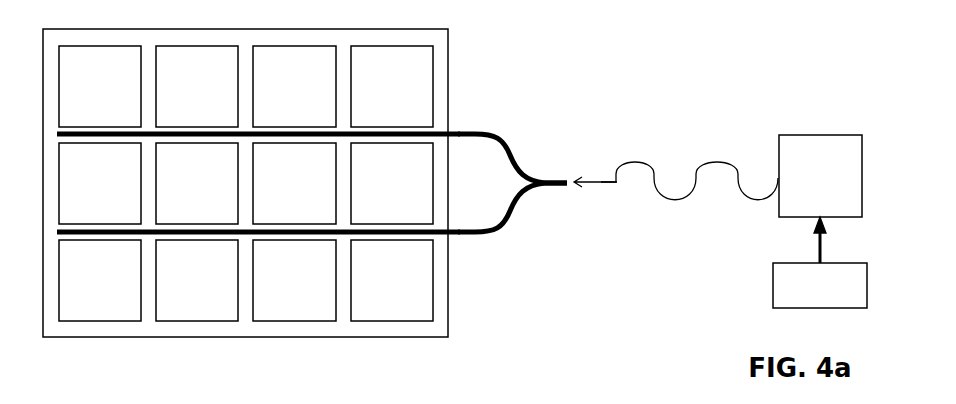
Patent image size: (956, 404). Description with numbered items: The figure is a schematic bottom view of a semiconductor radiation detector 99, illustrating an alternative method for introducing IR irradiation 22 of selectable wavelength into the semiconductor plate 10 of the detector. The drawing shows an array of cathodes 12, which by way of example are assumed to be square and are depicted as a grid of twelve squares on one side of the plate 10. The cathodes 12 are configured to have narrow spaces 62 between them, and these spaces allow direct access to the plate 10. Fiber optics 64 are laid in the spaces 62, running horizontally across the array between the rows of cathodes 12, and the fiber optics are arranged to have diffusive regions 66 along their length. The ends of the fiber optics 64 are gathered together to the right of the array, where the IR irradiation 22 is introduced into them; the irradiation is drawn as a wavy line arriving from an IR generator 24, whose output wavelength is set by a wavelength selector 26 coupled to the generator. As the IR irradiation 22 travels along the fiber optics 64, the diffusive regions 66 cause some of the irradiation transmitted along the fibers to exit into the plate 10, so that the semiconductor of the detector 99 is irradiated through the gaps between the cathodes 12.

The semiconductor plate 10 is at (448, 93).
The cathodes 12 is at (98, 322).
The narrow spaces 62 is at (243, 305).
The diffusive regions 66 is at (397, 122).
The fiber optics 64 is at (507, 144).
The IR irradiation 22 is at (653, 167).
The IR generator 24 is at (799, 135).
The wavelength selector 26 is at (773, 290).
The semiconductor radiation detector 99 is at (495, 350).